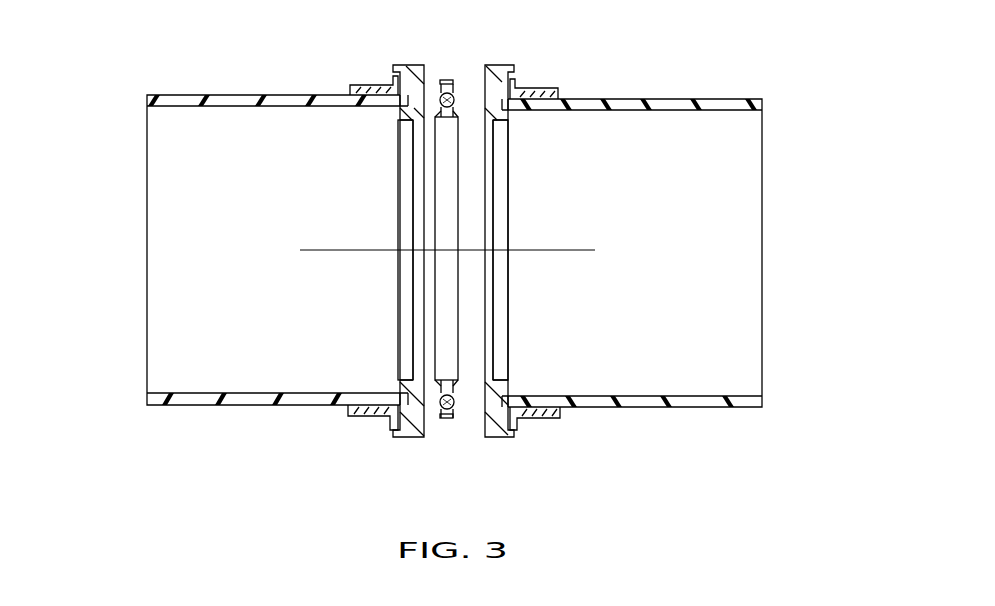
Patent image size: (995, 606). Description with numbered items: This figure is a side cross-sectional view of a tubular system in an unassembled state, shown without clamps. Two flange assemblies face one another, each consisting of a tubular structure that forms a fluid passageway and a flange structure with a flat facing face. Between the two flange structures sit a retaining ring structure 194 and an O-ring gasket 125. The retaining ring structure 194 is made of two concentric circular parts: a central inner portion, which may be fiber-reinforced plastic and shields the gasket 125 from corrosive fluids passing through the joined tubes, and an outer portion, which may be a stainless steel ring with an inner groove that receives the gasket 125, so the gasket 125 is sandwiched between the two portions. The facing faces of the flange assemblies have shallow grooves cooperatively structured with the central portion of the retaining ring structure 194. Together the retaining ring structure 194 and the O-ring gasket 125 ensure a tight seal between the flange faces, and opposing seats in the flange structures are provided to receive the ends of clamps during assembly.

The O-ring gasket 125 is at (433, 72).
The retaining ring structure 194 is at (445, 419).